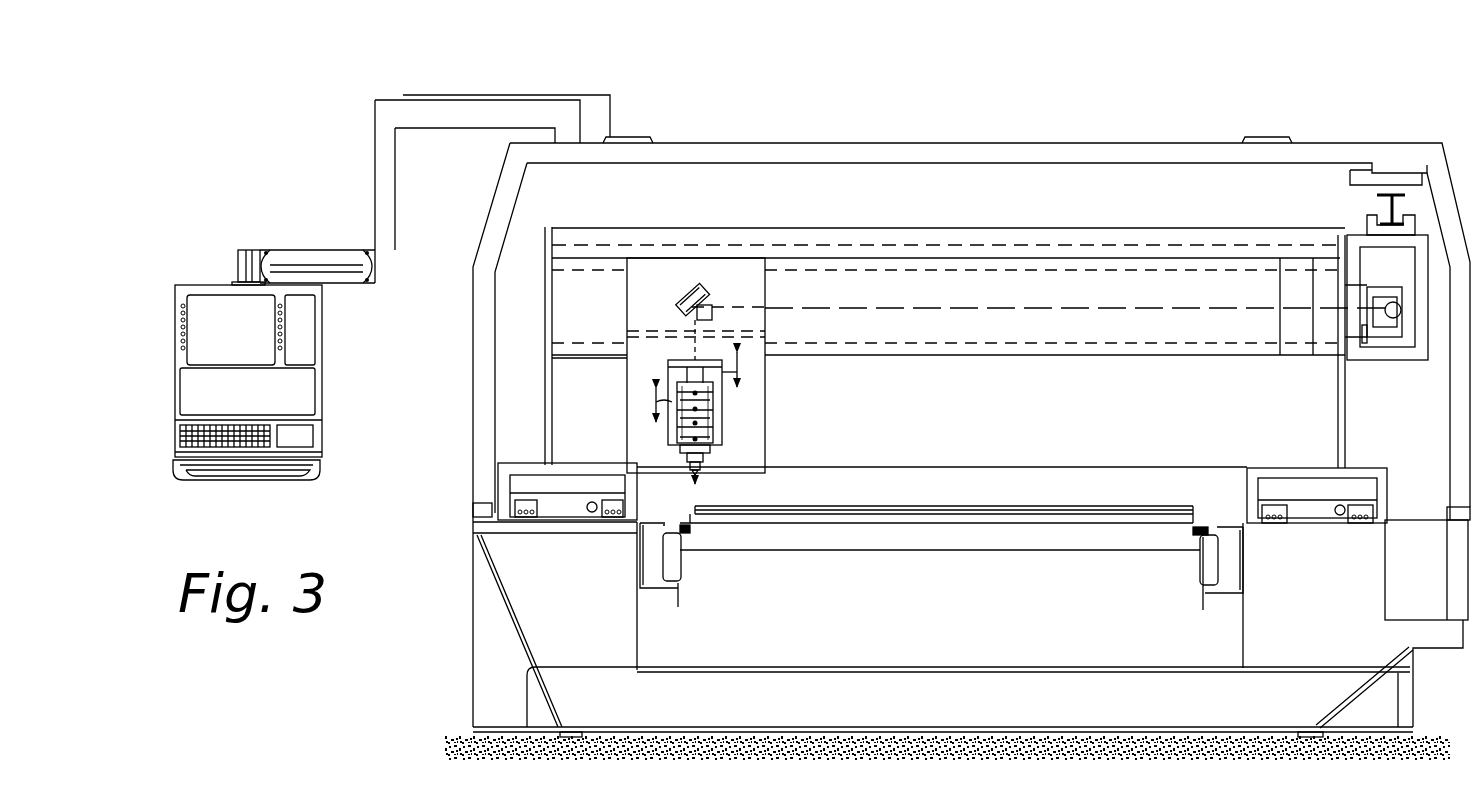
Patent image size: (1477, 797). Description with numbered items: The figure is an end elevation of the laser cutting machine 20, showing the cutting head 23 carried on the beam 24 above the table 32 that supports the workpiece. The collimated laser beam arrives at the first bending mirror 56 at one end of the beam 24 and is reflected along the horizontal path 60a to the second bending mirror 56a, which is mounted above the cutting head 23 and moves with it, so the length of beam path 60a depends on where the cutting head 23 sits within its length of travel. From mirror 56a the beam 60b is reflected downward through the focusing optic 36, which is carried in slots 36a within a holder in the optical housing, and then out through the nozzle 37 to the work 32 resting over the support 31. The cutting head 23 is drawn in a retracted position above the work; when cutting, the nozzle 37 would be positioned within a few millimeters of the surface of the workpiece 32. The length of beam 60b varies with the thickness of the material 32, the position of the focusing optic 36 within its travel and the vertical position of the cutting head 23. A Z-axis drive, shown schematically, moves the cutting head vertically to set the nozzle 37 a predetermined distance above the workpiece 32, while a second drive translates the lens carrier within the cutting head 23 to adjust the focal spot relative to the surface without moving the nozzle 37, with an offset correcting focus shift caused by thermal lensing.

The cutting machine 20 is at (968, 130).
The cutting head 23 is at (794, 383).
The beam 24 is at (952, 228).
The workpiece support 31 is at (1022, 533).
The workpiece 32 is at (977, 507).
The focusing optic 36 is at (670, 438).
The slots 36a is at (713, 439).
The nozzle 37 is at (699, 478).
The first bending mirror 56 is at (1397, 303).
The second bending mirror 56a is at (703, 290).
The beam 60a is at (1060, 312).
The beam 60b is at (690, 345).